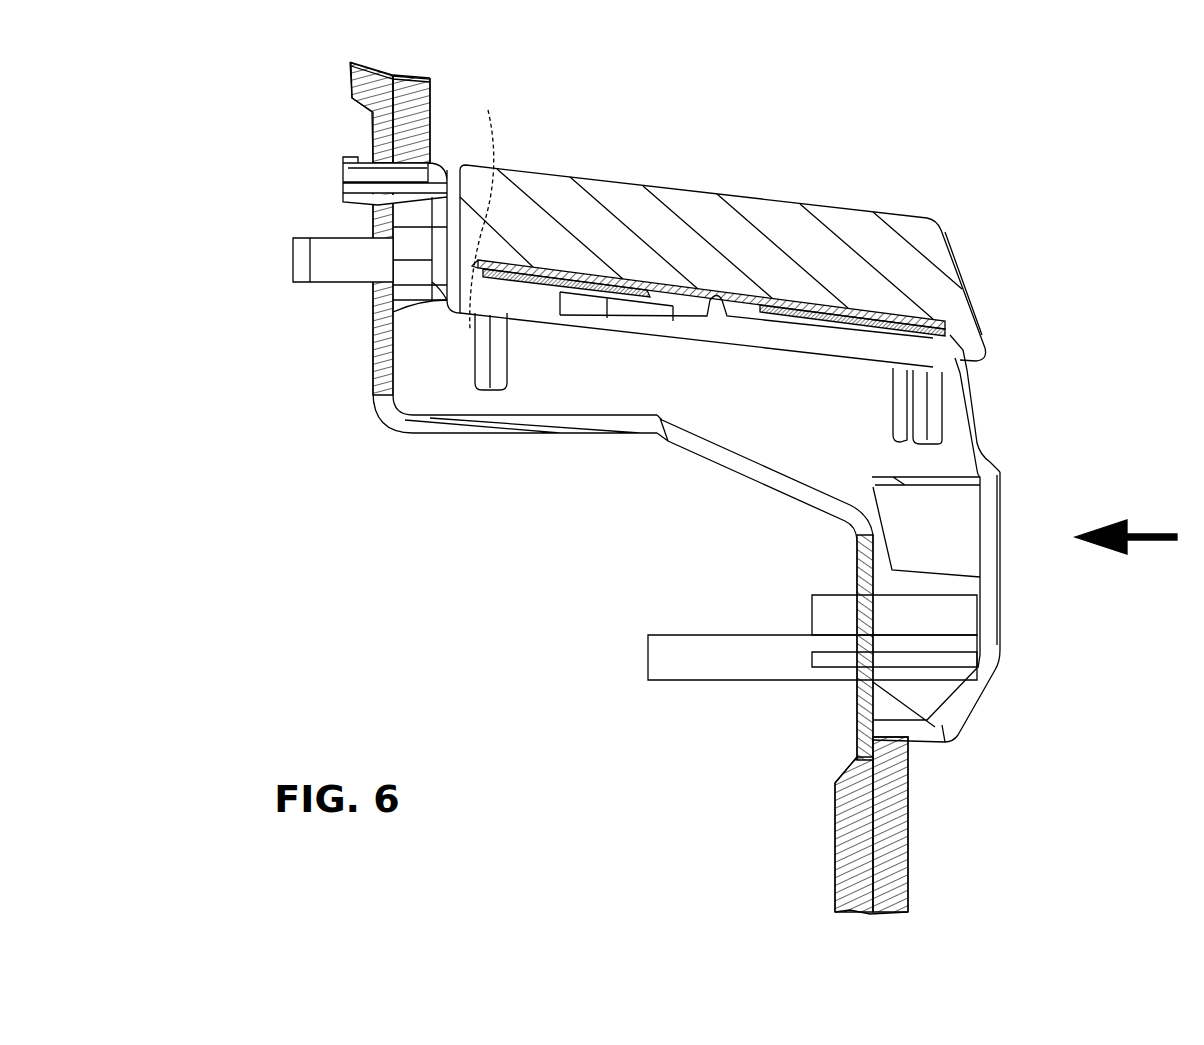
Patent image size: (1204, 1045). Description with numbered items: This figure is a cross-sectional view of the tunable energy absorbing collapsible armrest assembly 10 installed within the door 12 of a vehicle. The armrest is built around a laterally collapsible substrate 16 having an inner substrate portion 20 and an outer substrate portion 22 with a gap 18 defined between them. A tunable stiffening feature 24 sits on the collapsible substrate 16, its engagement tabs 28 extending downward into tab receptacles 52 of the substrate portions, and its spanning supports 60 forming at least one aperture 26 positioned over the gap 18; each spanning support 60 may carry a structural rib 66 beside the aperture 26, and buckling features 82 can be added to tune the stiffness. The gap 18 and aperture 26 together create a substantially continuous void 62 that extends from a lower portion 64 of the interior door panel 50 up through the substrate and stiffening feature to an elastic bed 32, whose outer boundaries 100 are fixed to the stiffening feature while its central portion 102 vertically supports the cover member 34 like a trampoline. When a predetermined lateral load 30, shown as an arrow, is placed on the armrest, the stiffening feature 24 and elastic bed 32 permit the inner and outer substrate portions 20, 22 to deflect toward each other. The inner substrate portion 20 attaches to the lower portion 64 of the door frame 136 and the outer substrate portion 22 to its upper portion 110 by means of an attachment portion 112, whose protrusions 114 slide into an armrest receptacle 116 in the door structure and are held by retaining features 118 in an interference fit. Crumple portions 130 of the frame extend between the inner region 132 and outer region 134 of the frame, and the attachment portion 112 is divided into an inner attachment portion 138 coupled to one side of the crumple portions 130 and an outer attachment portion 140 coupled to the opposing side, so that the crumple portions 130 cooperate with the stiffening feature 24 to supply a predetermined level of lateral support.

The tunable energy absorbing collapsible armrest assembly 10 is at (980, 132).
The door 12 is at (262, 160).
The laterally collapsible substrate 16 is at (1023, 478).
The gap 18 is at (638, 308).
The inner substrate portion 20 is at (983, 422).
The outer substrate portion 22 is at (487, 363).
The tunable stiffening feature 24 is at (967, 360).
The aperture 26 is at (815, 300).
The engagement tabs 28 is at (380, 393).
The predetermined lateral load 30 is at (1147, 540).
The elastic bed 32 is at (630, 262).
The cover member 34 is at (568, 202).
The interior door panel 50 is at (890, 825).
The tab receptacles 52 is at (480, 208).
The spanning support 60 is at (797, 322).
The continuous void 62 is at (744, 392).
The lower portion 64 is at (847, 853).
The structural rib 66 is at (745, 290).
The buckling features 82 is at (700, 300).
The outer boundaries 100 is at (933, 347).
The central portion 102 is at (690, 300).
The upper portion 110 is at (363, 100).
The attachment portion 112 is at (410, 290).
The protrusions 114 is at (317, 258).
The armrest receptacle 116 is at (840, 732).
The retaining features 118 is at (858, 687).
The crumple portions 130 is at (670, 440).
The inner region 132 is at (858, 623).
The outer region 134 is at (365, 287).
The door frame 136 is at (825, 807).
The inner attachment portion 138 is at (887, 643).
The outer attachment portion 140 is at (403, 251).